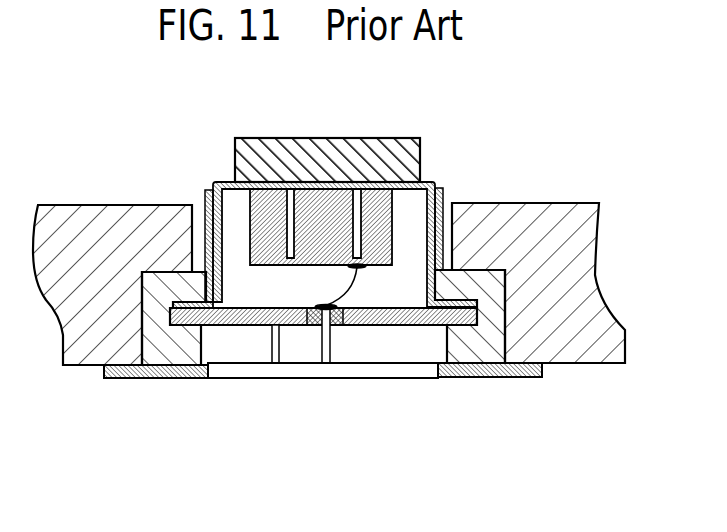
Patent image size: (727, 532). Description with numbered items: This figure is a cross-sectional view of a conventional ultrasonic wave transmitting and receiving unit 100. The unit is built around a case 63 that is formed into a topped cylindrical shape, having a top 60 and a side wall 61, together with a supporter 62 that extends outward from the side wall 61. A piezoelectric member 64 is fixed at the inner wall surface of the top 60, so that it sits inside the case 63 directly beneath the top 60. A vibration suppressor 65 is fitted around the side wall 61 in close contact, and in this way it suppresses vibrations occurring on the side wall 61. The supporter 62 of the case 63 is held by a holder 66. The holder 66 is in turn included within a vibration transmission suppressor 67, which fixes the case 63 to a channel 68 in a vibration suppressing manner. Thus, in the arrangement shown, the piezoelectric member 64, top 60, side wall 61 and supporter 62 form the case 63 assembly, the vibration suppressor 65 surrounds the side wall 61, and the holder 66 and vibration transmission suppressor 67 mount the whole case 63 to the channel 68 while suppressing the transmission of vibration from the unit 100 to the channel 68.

The ultrasonic wave transmitting and receiving unit 100 is at (363, 447).
The top 60 is at (425, 183).
The side wall 61 is at (443, 188).
The supporter 62 is at (177, 271).
The case 63 is at (435, 187).
The piezoelectric member 64 is at (263, 208).
The vibration suppressor 65 is at (203, 183).
The holder 66 is at (489, 275).
The vibration transmission suppressor 67 is at (499, 290).
The channel 68 is at (93, 210).